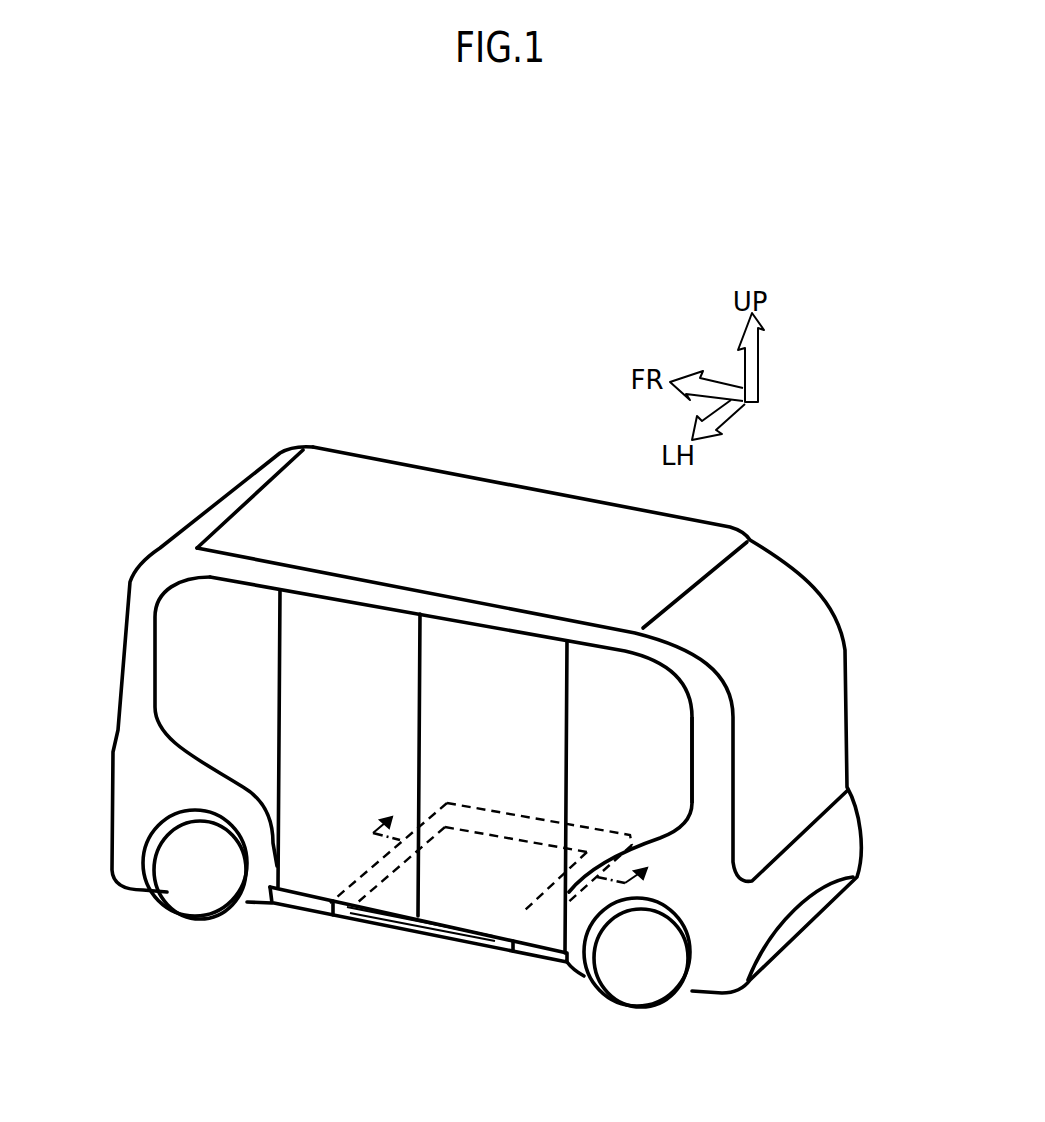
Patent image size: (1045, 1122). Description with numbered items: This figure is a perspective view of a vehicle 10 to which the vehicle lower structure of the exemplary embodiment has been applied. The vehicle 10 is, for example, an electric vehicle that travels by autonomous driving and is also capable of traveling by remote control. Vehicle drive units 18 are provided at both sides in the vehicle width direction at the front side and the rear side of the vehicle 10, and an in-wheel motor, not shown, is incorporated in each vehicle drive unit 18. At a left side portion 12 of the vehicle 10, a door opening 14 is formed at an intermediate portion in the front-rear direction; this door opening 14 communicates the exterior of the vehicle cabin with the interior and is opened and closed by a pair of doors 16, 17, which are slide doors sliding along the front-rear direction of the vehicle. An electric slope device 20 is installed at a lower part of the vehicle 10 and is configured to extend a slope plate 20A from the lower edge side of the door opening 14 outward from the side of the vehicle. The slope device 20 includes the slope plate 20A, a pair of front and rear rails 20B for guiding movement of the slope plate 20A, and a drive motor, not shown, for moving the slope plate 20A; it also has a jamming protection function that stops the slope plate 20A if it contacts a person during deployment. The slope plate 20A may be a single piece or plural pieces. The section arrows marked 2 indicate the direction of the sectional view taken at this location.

The vehicle 10 is at (782, 487).
The left side portion 12 is at (251, 616).
The door opening 14 is at (490, 628).
The door 16 is at (360, 623).
The door 17 is at (537, 658).
The vehicle drive unit 18 is at (187, 888).
The slope device 20 is at (472, 834).
The slope plate 20A is at (497, 847).
The rail 20B is at (380, 860).
The section line for FIG. 2 is at (373, 833).